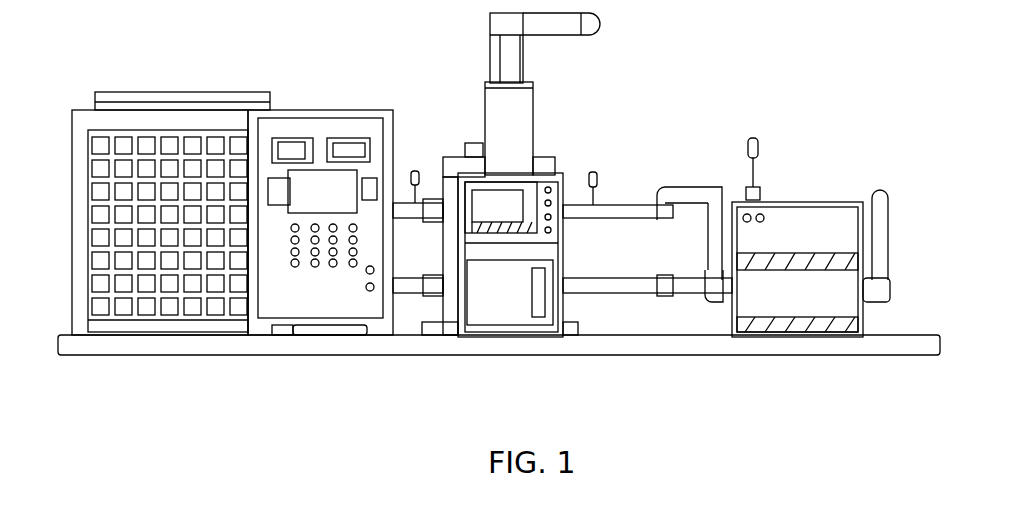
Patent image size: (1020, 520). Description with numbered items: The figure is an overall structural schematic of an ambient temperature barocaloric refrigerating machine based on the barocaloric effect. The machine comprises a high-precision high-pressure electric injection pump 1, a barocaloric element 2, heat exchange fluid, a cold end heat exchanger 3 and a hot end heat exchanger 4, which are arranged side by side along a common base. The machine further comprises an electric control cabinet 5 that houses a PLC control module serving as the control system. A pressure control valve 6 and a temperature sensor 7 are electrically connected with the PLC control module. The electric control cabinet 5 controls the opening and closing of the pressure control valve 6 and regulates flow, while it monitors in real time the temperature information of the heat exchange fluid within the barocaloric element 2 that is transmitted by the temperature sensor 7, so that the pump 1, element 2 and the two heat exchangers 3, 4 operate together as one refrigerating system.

The electric injection pump 1 is at (577, 342).
The barocaloric element 2 is at (543, 167).
The cold end heat exchanger 3 is at (800, 218).
The hot end heat exchanger 4 is at (178, 133).
The electric control cabinet 5 is at (320, 297).
The pressure control valve 6 is at (595, 170).
The temperature sensor 7 is at (760, 140).